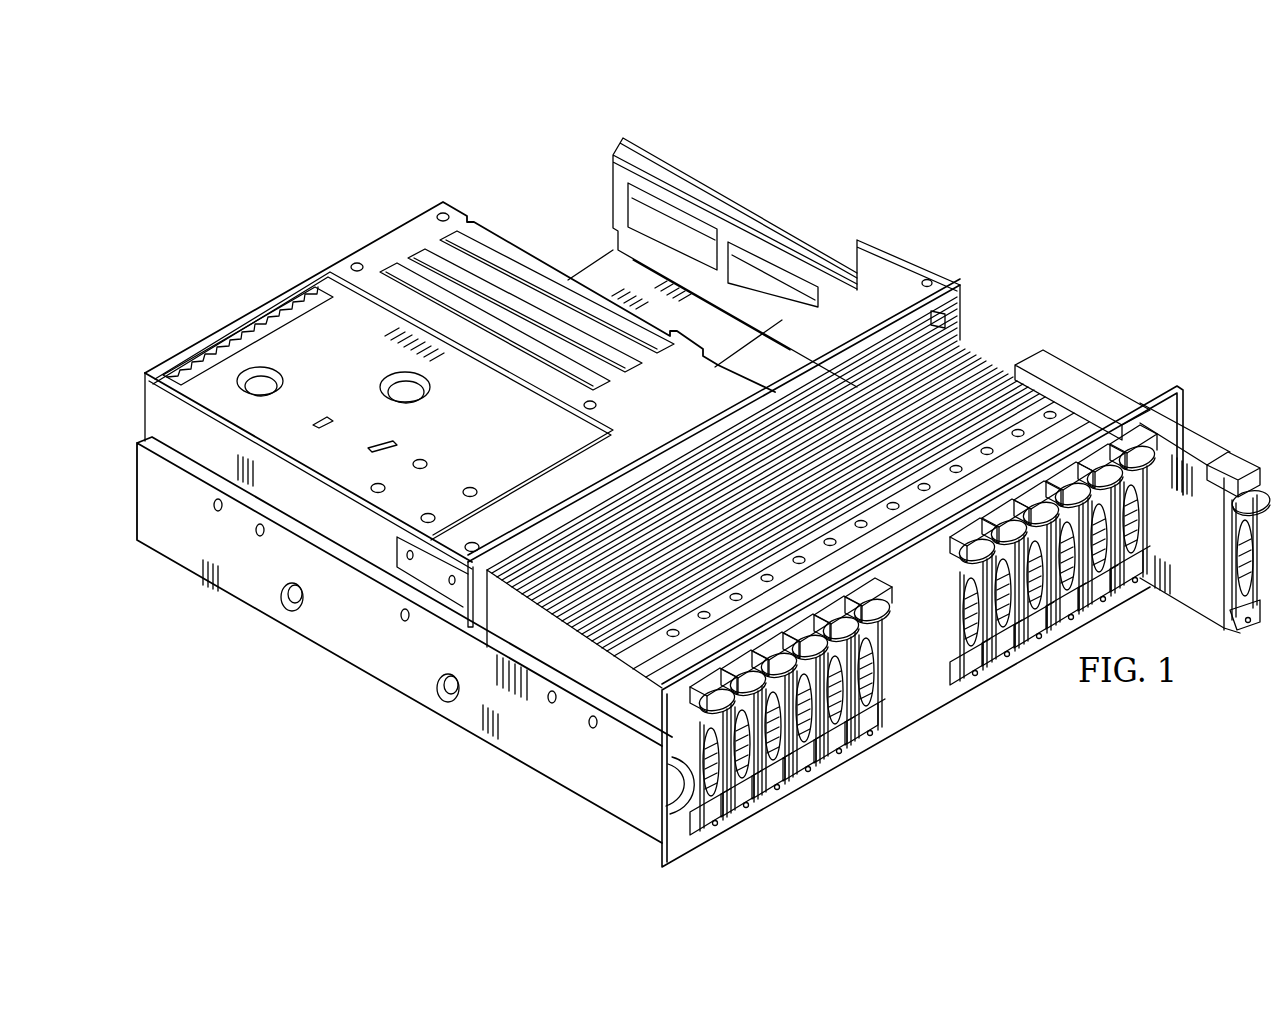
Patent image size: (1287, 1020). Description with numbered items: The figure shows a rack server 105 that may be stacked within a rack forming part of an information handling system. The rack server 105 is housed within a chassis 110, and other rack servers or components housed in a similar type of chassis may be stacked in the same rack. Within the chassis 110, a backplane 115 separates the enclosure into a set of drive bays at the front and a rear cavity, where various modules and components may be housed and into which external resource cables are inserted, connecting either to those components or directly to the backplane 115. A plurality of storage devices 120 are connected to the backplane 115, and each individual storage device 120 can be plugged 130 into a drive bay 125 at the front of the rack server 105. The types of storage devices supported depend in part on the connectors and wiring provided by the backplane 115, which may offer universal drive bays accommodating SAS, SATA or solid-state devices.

The rack server 105 is at (340, 104).
The chassis 110 is at (407, 688).
The backplane 115 is at (958, 313).
The storage device 120 is at (713, 827).
The drive bay 125 is at (937, 703).
The plugging of storage device 130 is at (1247, 476).